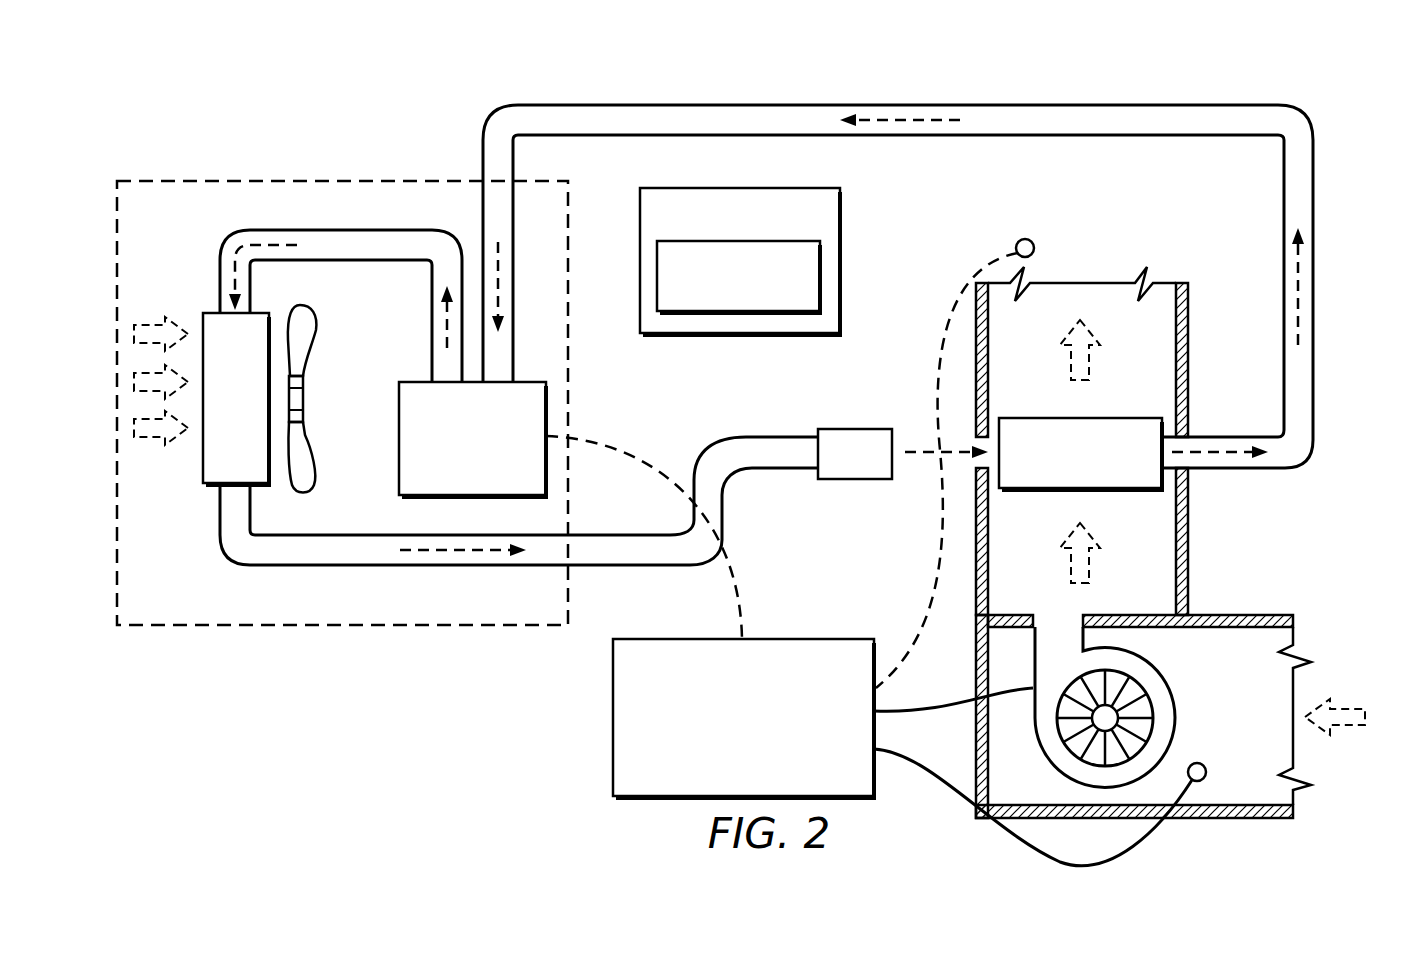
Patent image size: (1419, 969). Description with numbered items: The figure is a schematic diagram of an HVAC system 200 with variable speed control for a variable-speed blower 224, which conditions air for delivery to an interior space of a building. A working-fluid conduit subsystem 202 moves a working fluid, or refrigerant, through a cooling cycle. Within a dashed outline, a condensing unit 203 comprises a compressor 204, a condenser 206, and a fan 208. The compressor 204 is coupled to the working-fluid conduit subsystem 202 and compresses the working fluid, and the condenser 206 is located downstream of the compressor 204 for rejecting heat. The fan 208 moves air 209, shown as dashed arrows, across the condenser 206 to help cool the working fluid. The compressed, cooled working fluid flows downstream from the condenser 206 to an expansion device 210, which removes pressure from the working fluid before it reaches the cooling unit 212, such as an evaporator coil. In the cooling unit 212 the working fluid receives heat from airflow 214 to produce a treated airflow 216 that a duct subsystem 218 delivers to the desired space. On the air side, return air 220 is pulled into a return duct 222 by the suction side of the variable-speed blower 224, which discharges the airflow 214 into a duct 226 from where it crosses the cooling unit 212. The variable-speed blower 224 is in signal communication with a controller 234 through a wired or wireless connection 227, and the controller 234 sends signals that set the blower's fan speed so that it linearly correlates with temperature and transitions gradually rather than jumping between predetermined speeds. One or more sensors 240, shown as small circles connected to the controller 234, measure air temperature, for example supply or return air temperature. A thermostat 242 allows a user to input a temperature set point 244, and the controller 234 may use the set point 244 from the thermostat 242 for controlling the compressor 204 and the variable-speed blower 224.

The HVAC system 200 is at (1236, 46).
The working-fluid conduit subsystem 202 is at (632, 105).
The condensing unit 203 is at (314, 181).
The compressor 204 is at (472, 439).
The condenser 206 is at (203, 466).
The fan 208 is at (318, 322).
The air 209 is at (150, 318).
The expansion device 210 is at (855, 454).
The cooling unit 212 is at (1090, 490).
The airflow 214 is at (1090, 565).
The treated airflow 216 is at (1090, 358).
The duct subsystem 218 is at (1190, 335).
The return air 220 is at (1358, 705).
The return duct 222 is at (1220, 818).
The variable-speed blower 224 is at (1160, 676).
The duct 226 is at (1190, 507).
The wired or wireless connection 227 is at (947, 713).
The controller 234 is at (782, 525).
The sensor 240 is at (1035, 246).
The thermostat 242 is at (843, 218).
The temperature set point 244 is at (822, 275).